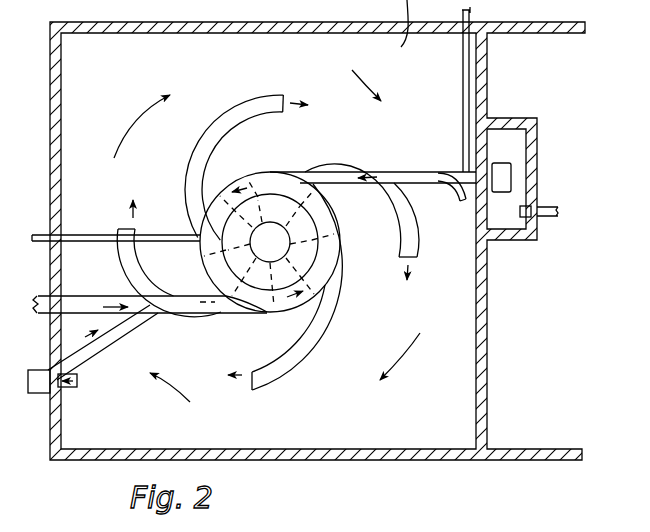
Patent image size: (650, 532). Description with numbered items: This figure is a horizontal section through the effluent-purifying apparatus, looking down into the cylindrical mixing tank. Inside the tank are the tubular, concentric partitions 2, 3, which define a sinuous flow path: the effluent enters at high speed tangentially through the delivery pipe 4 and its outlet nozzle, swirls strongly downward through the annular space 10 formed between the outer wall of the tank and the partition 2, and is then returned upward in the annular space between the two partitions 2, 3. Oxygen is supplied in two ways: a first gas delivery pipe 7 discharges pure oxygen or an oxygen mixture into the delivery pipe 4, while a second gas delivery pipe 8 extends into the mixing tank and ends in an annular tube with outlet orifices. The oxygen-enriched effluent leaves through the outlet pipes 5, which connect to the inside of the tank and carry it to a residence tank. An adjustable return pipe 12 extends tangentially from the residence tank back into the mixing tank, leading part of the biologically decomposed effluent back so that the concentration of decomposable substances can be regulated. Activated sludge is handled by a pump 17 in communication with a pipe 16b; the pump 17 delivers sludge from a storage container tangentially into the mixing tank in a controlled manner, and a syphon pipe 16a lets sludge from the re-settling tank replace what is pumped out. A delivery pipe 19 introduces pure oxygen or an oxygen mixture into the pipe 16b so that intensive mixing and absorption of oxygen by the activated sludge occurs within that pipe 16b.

The tubular concentric partition 2 is at (262, 188).
The tubular concentric partition 3 is at (338, 231).
The delivery pipe 4 is at (41, 312).
The outlet pipes 5 is at (200, 138).
The first gas delivery pipe 7 is at (73, 303).
The second gas delivery pipe 8 is at (38, 242).
The annular space 10 is at (273, 303).
The adjustable return pipe 12 is at (111, 333).
The syphon pipe 16a is at (553, 220).
The pipe 16b is at (397, 180).
The pump 17 is at (508, 176).
The delivery pipe 19 is at (471, 14).